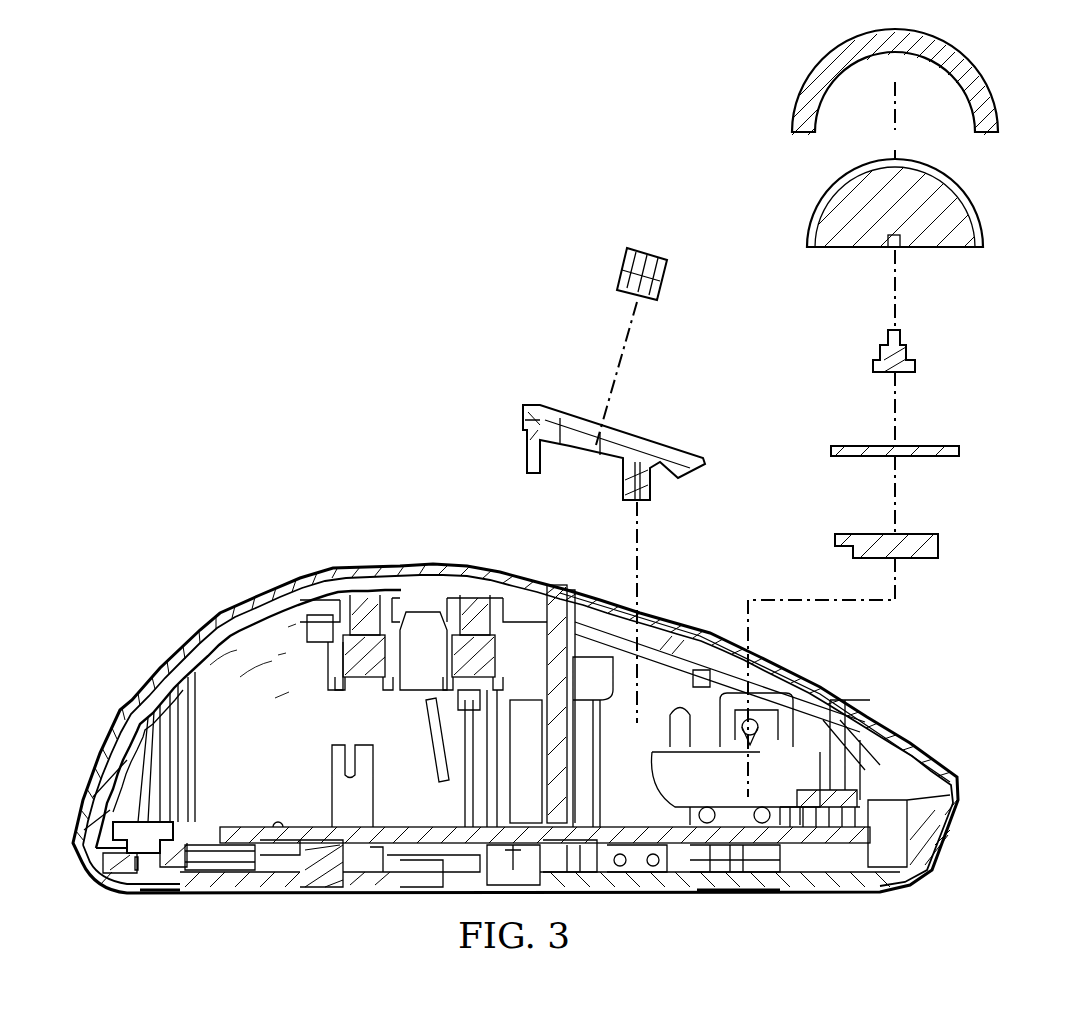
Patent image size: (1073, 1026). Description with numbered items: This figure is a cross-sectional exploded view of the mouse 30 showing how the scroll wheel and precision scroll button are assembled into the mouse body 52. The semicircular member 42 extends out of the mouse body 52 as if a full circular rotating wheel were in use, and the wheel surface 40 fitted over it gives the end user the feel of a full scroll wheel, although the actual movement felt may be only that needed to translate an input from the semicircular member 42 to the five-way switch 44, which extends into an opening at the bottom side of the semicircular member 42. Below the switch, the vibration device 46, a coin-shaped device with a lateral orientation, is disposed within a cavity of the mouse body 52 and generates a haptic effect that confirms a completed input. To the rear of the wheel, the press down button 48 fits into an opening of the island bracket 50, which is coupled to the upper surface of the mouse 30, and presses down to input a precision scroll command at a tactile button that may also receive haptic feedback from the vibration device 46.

The mouse 30 is at (276, 520).
The wheel surface 40 is at (993, 110).
The semicircular member 42 is at (990, 232).
The five-way switch 44 is at (905, 336).
The vibration device 46 is at (925, 534).
The press down button 48 is at (620, 263).
The island bracket 50 is at (688, 452).
The mouse body 52 is at (153, 822).